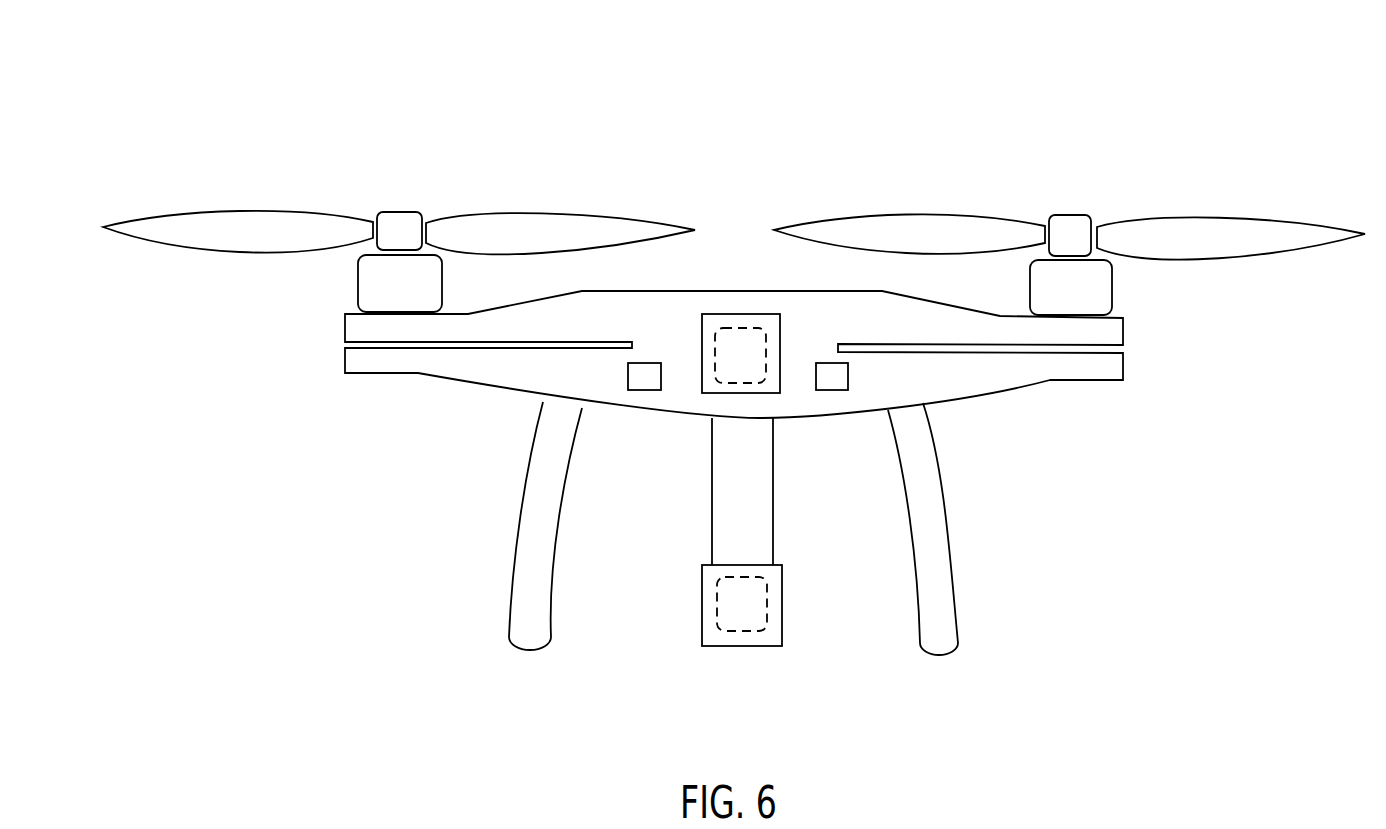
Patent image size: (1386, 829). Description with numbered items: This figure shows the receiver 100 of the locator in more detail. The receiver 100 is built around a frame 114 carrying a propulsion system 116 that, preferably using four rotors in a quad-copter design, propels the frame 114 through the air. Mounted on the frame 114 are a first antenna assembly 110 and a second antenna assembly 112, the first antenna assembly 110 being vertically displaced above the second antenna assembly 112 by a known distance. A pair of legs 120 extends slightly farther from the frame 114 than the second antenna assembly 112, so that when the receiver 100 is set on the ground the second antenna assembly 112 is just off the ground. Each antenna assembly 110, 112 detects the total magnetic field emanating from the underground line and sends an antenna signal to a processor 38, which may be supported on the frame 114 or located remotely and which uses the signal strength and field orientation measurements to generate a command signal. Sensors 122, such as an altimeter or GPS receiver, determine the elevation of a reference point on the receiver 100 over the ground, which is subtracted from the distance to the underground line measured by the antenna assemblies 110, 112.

The receiver 100 is at (248, 115).
The first antenna assembly 110 is at (782, 394).
The second antenna assembly 112 is at (777, 568).
The frame 114 is at (734, 287).
The propulsion system 116 is at (497, 225).
The legs 120 is at (780, 528).
The sensors 122 is at (948, 391).
The processor 38 is at (539, 393).